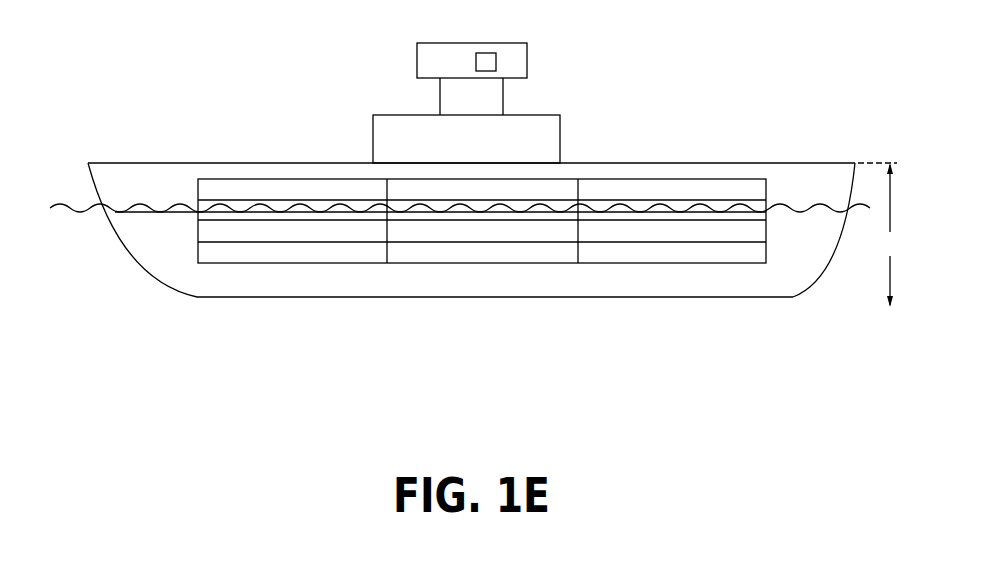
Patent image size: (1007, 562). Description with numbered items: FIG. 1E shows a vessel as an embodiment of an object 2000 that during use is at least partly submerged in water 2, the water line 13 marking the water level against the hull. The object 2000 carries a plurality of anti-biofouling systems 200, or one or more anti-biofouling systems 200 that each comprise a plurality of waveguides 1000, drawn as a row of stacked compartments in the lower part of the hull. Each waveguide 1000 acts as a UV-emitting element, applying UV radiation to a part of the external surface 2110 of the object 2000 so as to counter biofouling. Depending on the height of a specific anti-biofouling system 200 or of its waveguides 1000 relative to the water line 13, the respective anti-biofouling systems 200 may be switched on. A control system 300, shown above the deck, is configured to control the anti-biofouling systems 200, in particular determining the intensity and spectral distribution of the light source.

The water 2 is at (69, 220).
The water line 13 is at (162, 207).
The anti-biofouling system 200 is at (249, 269).
The control system 300 is at (496, 62).
The waveguide 1000 is at (316, 255).
The object 2000 is at (474, 202).
The external surface 2110 is at (818, 173).